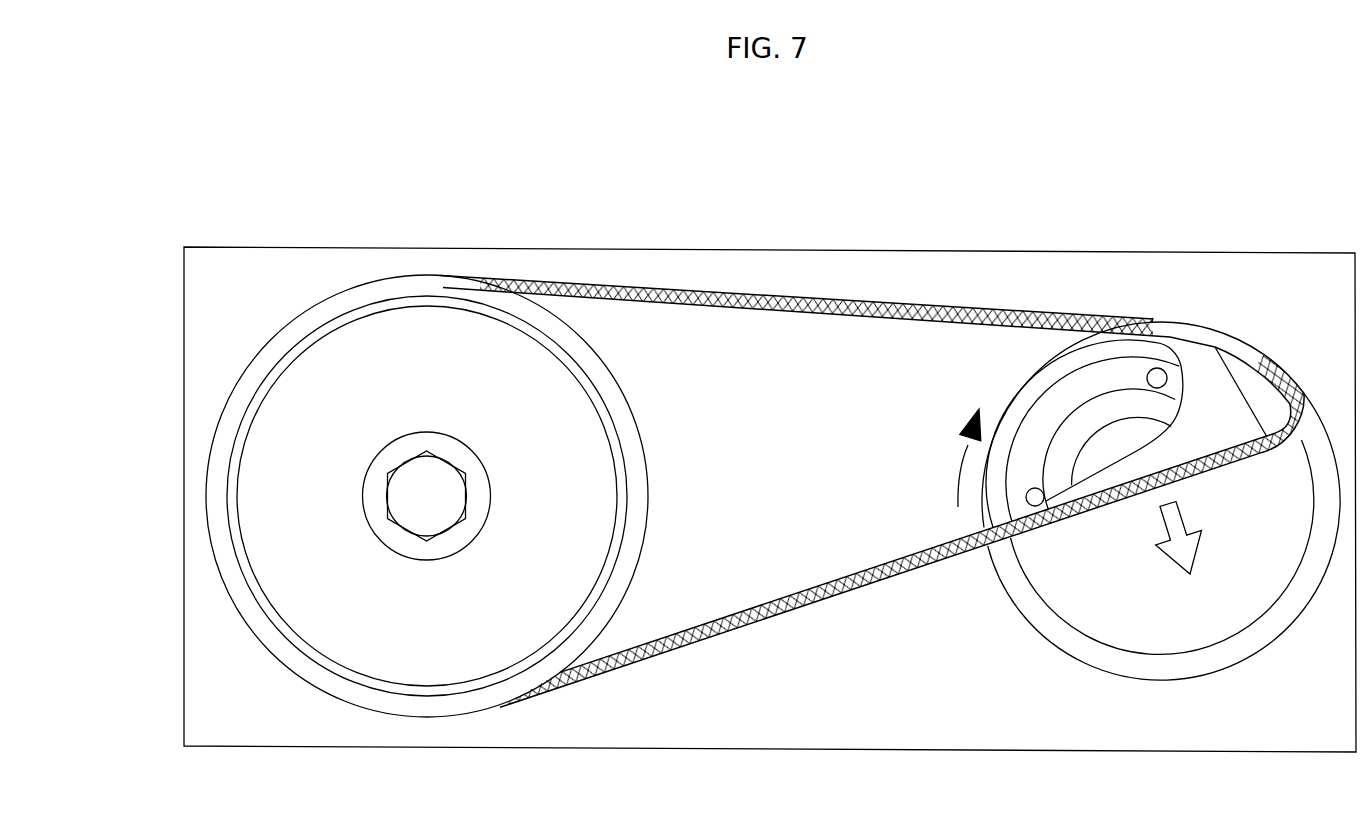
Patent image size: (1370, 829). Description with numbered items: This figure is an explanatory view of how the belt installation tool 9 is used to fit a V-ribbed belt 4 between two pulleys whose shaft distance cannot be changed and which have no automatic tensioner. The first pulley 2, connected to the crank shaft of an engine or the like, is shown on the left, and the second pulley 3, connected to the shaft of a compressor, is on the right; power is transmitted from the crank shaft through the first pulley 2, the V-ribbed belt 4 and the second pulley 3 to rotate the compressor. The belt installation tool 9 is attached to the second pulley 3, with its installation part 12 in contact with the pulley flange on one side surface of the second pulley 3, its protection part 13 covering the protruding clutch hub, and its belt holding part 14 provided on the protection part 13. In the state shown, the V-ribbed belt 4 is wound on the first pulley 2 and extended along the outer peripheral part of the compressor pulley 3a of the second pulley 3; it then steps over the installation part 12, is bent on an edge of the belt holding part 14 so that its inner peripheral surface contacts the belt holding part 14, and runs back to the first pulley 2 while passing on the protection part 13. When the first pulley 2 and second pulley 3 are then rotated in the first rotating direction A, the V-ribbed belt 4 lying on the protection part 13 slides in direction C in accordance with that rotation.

The first pulley 2 is at (310, 282).
The second pulley 3 is at (984, 392).
The compressor pulley 3a is at (1052, 362).
The V-ribbed belt 4 is at (712, 294).
The belt installation tool 9 is at (1211, 314).
The installation part 12 is at (1242, 347).
The protection part 13 is at (1150, 632).
The belt holding part 14 is at (1270, 361).
The first rotating direction A is at (953, 458).
The direction C is at (1182, 517).